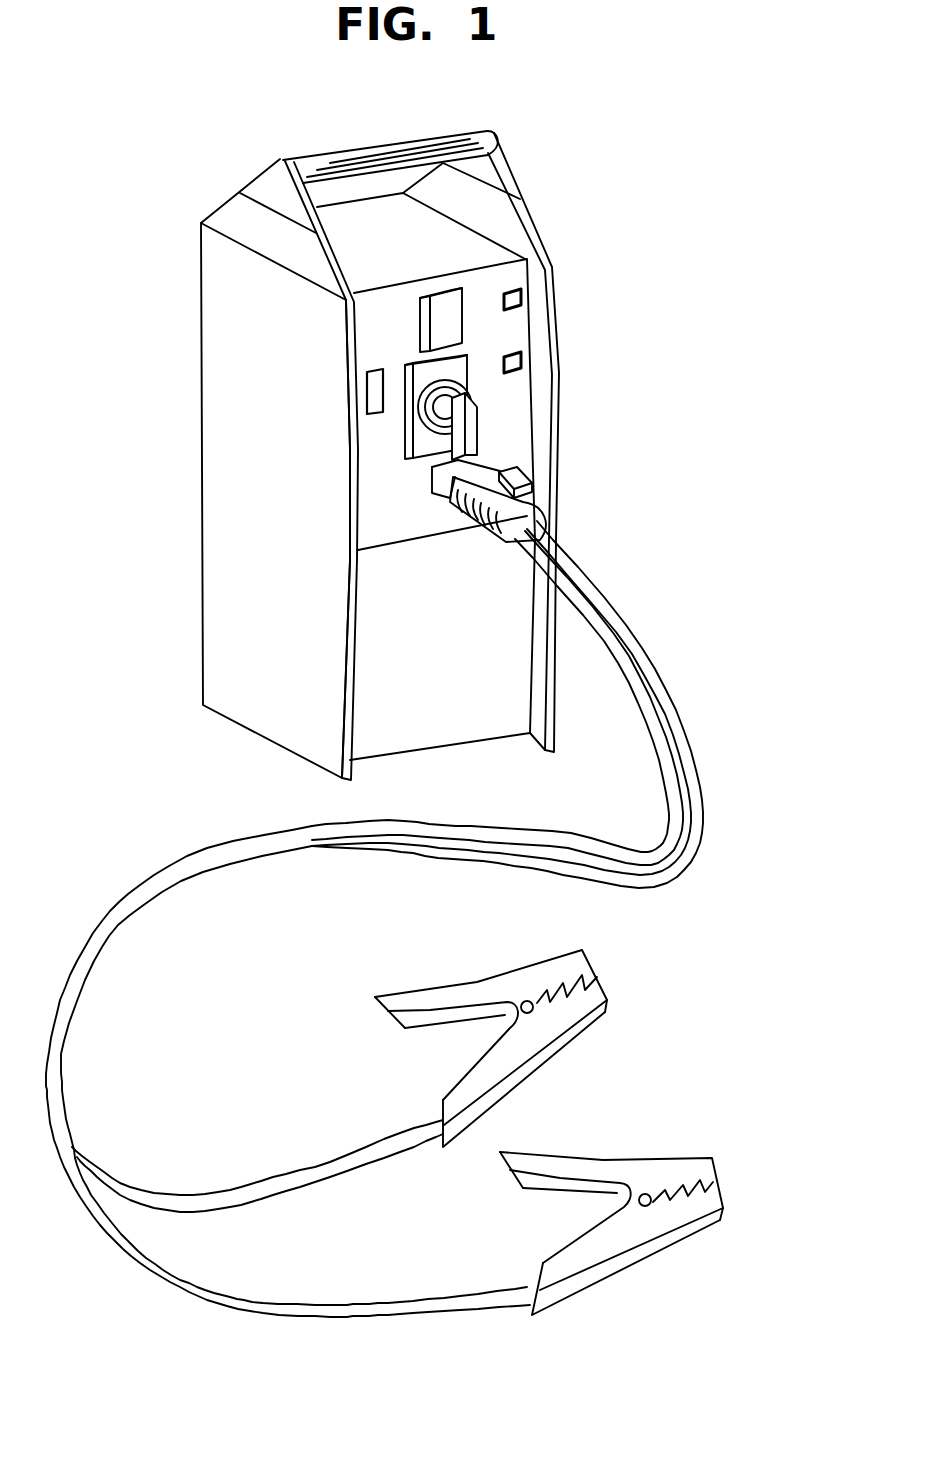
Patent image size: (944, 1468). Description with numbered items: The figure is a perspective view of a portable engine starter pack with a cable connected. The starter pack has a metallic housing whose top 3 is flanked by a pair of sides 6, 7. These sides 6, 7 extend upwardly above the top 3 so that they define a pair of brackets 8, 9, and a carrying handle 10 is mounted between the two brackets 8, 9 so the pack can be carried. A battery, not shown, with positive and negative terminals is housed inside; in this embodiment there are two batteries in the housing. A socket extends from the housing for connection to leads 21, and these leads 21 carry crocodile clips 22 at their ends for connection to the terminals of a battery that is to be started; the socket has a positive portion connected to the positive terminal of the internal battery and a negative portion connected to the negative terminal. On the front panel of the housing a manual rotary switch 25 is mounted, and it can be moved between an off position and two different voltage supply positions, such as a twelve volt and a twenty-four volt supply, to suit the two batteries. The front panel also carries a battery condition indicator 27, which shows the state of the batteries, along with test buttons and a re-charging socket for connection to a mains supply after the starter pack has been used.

The top 3 is at (364, 256).
The side 6 is at (225, 462).
The side 7 is at (543, 320).
The bracket 8 is at (228, 211).
The bracket 9 is at (488, 206).
The carrying handle 10 is at (412, 152).
The leads 21 is at (604, 630).
The crocodile clips 22 is at (577, 1007).
The manual rotary switch 25 is at (462, 426).
The battery condition indicator 27 is at (446, 310).